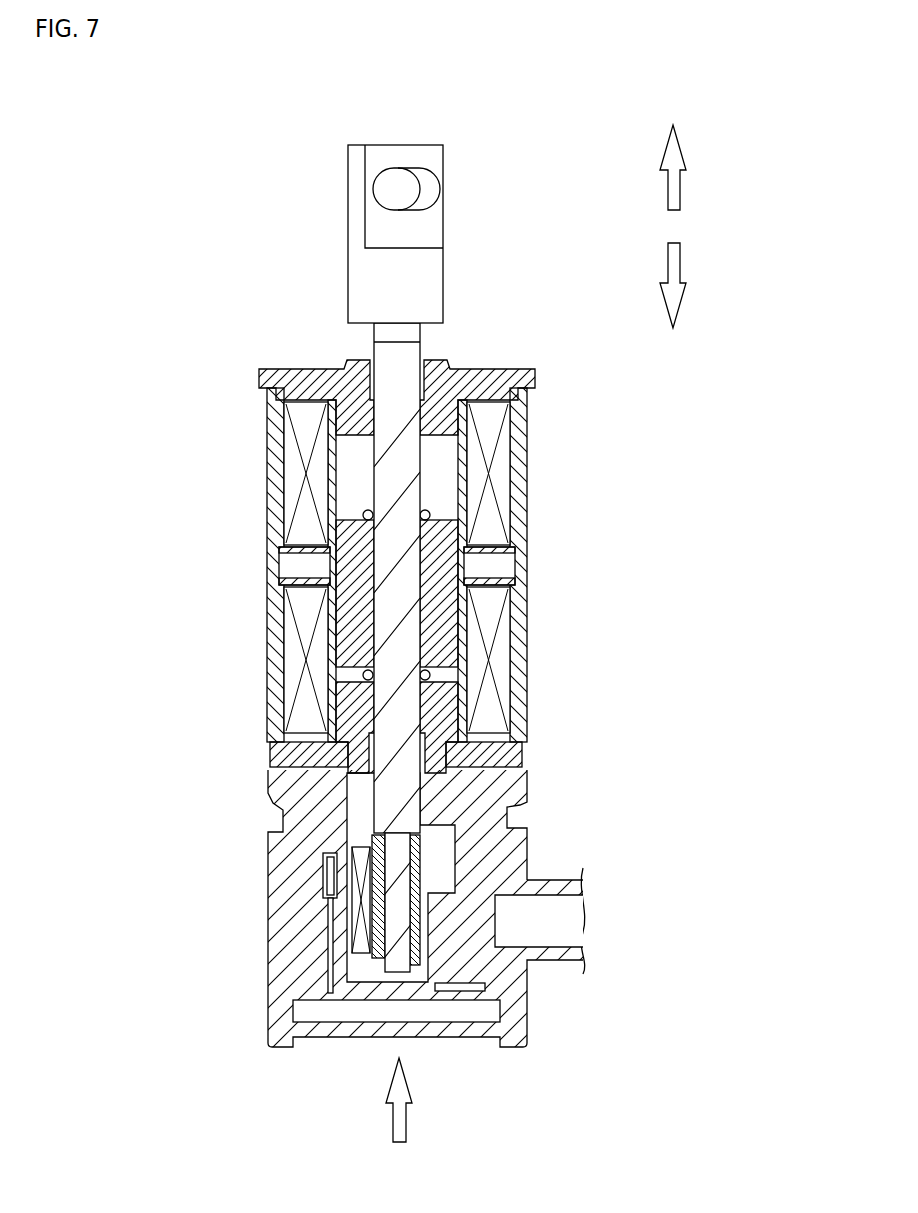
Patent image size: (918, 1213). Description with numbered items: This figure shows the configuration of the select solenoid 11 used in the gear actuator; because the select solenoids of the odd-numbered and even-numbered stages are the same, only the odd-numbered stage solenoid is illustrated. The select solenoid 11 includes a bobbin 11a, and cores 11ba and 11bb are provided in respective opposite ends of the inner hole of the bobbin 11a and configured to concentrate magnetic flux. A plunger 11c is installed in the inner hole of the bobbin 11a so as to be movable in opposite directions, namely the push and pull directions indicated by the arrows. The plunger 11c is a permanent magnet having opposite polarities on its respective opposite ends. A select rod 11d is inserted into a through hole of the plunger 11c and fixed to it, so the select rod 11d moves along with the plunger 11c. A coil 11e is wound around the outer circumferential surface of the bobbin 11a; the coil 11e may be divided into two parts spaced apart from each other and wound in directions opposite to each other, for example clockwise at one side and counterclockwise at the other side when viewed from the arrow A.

The select solenoid 11 is at (447, 623).
The bobbin 11a is at (305, 393).
The core 11ba is at (465, 430).
The core 11bb is at (460, 710).
The plunger 11c is at (460, 567).
The select rod 11d is at (422, 229).
The coil 11e is at (303, 630).